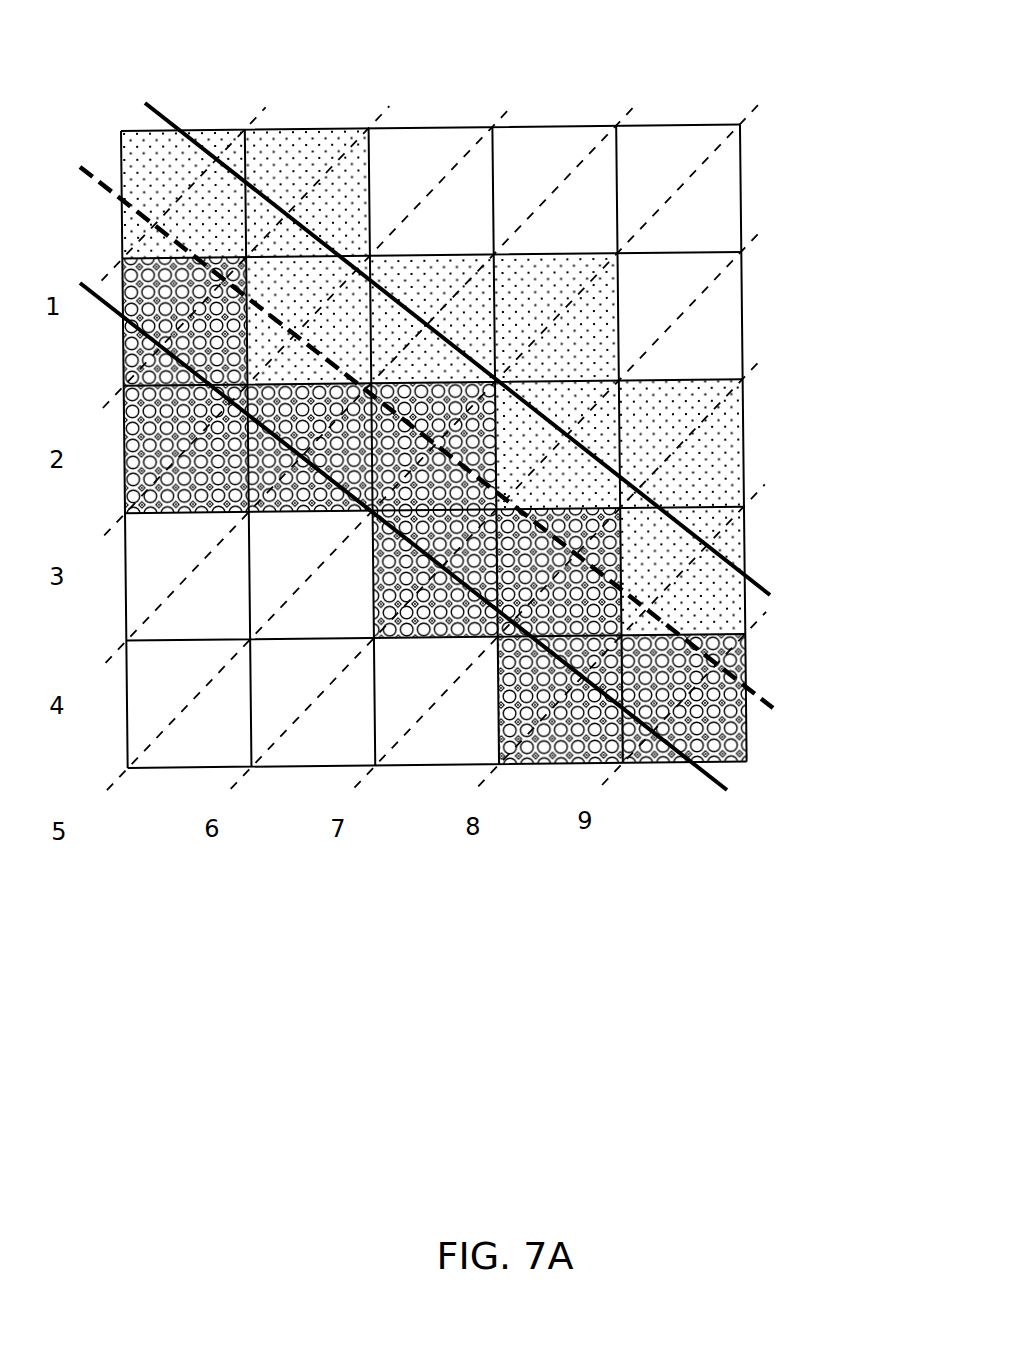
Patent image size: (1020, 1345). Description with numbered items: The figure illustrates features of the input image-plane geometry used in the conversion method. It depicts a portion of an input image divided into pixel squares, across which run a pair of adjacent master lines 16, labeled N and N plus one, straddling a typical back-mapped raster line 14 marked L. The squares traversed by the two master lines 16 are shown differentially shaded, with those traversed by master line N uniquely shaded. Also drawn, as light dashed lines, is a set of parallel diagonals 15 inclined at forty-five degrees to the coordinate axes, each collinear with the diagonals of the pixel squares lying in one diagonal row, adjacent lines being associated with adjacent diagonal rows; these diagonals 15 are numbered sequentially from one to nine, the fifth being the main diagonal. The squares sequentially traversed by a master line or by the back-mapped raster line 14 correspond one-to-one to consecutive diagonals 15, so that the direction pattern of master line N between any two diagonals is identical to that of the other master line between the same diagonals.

The back-mapped raster line 14 is at (663, 630).
The dashed diagonal lines 15 is at (516, 104).
The master lines 16 is at (743, 447).
The back-mapped raster line L is at (760, 696).
The master line N is at (725, 782).